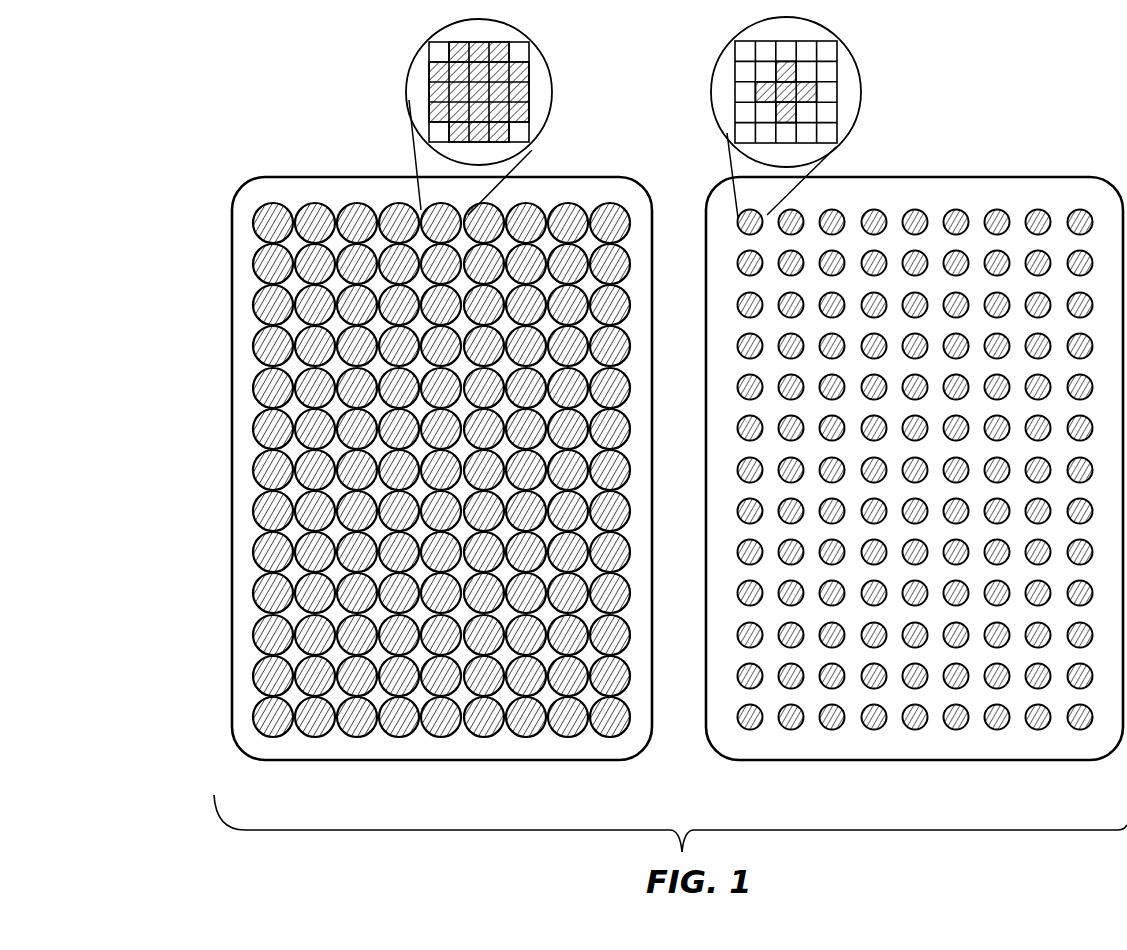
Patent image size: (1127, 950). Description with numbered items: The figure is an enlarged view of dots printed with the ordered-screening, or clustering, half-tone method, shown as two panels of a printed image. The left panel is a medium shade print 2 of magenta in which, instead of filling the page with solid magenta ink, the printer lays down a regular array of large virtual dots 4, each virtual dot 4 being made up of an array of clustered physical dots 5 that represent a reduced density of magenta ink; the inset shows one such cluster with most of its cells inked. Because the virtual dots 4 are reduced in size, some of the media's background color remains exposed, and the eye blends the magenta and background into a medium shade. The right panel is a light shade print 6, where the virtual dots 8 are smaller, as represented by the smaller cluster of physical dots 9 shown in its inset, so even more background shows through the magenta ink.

The medium shade print 2 is at (390, 495).
The virtual dot 4 is at (257, 707).
The clustered physical dots 5 is at (528, 118).
The light shade print 6 is at (914, 495).
The virtual dots 8 is at (873, 728).
The smaller cluster of physical dots 9 is at (796, 115).